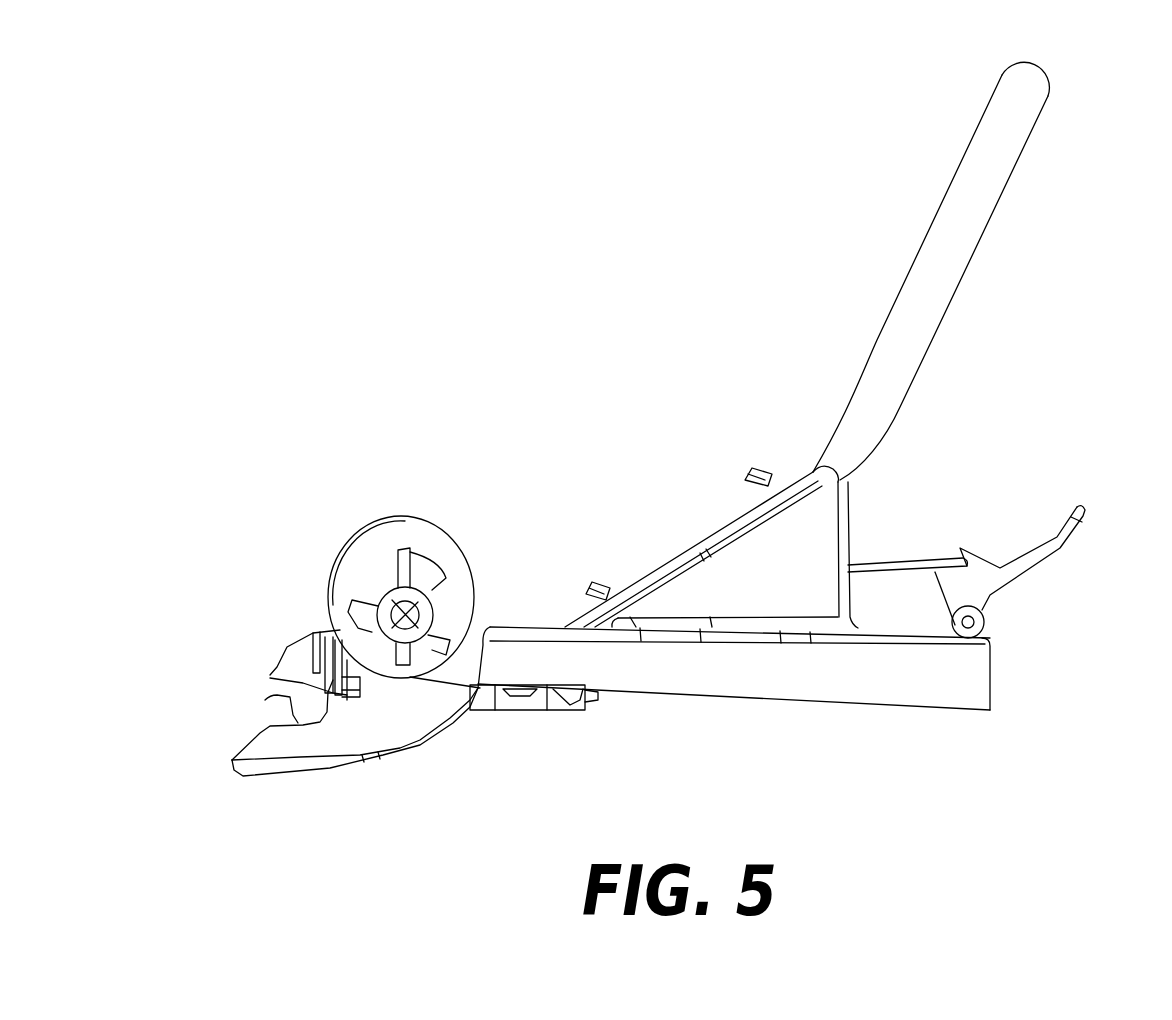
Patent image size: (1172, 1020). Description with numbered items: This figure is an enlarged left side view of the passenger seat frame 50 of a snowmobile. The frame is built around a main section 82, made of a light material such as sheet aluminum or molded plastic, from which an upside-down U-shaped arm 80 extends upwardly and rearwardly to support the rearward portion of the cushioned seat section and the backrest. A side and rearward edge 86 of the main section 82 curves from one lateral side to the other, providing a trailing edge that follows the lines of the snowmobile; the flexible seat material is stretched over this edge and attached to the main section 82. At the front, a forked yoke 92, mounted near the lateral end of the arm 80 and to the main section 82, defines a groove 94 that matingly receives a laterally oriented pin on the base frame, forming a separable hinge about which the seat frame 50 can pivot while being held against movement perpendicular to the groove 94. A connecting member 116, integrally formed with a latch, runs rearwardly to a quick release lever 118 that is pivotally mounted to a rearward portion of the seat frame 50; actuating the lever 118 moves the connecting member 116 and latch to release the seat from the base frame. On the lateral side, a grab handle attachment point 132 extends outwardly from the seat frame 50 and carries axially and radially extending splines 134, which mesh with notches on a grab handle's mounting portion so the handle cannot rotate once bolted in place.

The passenger seat frame 50 is at (702, 378).
The upside-down U-shaped arm 80 is at (990, 217).
The main section 82 is at (515, 627).
The side and rearward edge 86 is at (942, 690).
The forked yoke 92 is at (270, 675).
The groove 94 is at (265, 700).
The connecting member 116 is at (900, 557).
The quick release lever 118 is at (1057, 550).
The grab handle attachment point 132 is at (360, 557).
The splines 134 is at (393, 550).